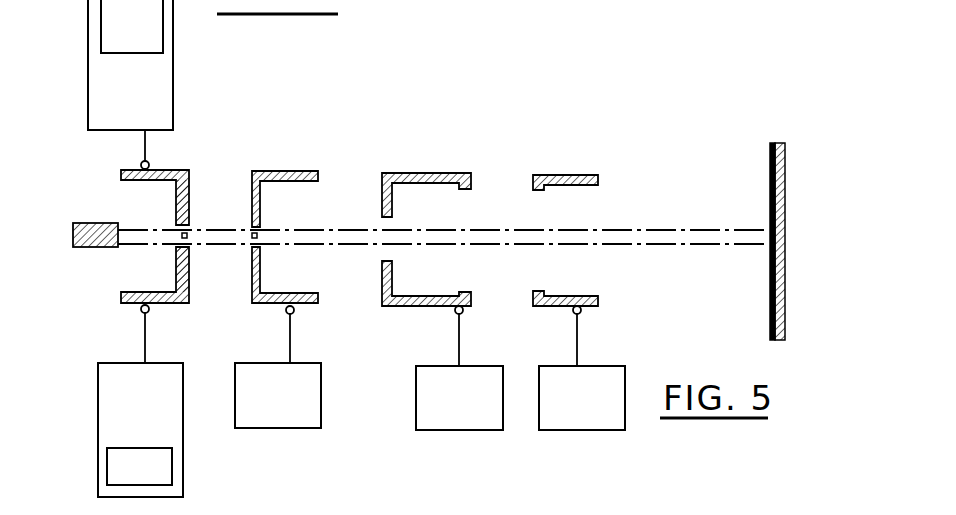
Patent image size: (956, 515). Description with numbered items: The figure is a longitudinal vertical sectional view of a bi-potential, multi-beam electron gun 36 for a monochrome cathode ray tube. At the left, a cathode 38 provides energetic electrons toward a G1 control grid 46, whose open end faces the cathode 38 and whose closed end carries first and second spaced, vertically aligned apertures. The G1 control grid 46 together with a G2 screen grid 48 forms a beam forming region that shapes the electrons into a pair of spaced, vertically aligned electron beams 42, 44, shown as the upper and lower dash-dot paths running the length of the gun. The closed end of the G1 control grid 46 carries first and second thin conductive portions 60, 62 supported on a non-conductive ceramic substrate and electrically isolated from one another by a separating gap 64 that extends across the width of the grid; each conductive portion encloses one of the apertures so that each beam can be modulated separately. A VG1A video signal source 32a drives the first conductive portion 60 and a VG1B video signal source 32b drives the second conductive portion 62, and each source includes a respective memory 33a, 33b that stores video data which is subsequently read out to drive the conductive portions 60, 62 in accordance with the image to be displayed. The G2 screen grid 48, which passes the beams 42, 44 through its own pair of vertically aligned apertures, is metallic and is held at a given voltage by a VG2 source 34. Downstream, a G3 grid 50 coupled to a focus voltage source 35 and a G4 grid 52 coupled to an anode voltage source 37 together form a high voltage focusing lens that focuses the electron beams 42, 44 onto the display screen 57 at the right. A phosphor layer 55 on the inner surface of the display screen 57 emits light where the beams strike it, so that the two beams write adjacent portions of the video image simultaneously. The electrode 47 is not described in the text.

The VG1A video signal source 32a is at (108, 72).
The memory 33a is at (152, 48).
The VG1B video signal source 32b is at (112, 432).
The memory 33b is at (165, 475).
The VG2 source 34 is at (265, 419).
The focus voltage source 35 is at (441, 420).
The anode voltage source 37 is at (558, 421).
The multi-beam electron gun 36 is at (381, 122).
The cathode 38 is at (85, 222).
The first electron beam 42 is at (640, 231).
The second electron beam 44 is at (647, 245).
The G1 control grid 46 is at (176, 167).
The lower first grid electrode 47 is at (162, 304).
The G2 screen grid 48 is at (287, 170).
The G3 grid 50 is at (434, 173).
The G4 grid 52 is at (567, 175).
The phosphor layer 55 is at (770, 156).
The display screen 57 is at (785, 207).
The first conductive portion 60 is at (188, 200).
The second conductive portion 62 is at (187, 272).
The separating gap 64 is at (186, 232).